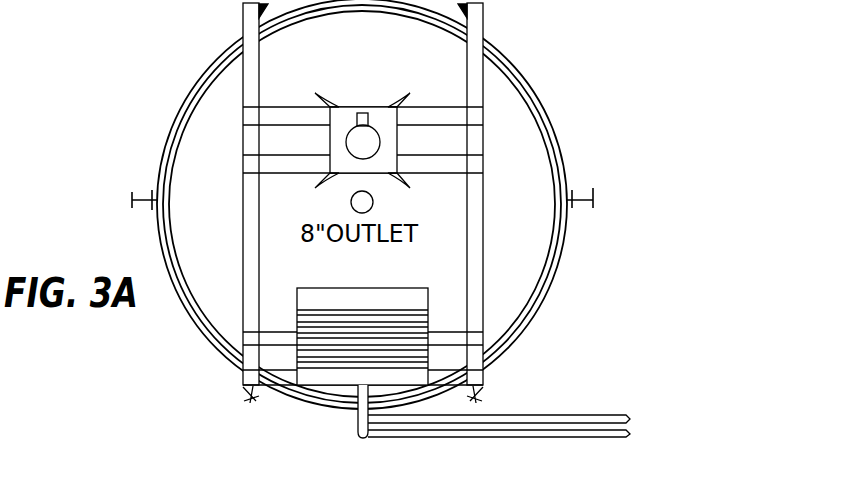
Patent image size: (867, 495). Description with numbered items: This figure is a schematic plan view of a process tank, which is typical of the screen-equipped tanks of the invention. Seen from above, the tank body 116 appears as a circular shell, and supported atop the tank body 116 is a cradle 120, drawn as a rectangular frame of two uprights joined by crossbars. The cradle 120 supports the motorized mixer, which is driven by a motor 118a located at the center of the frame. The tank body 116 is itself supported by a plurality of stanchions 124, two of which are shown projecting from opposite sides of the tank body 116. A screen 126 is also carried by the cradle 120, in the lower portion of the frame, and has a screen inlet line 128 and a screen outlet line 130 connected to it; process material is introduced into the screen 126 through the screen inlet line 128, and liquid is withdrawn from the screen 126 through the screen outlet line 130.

The tank body 116 is at (565, 258).
The motor 118a is at (363, 143).
The cradle 120 is at (493, 187).
The stanchion 124 is at (140, 193).
The screen 126 is at (305, 302).
The screen inlet line 128 is at (534, 437).
The screen outlet line 130 is at (525, 415).